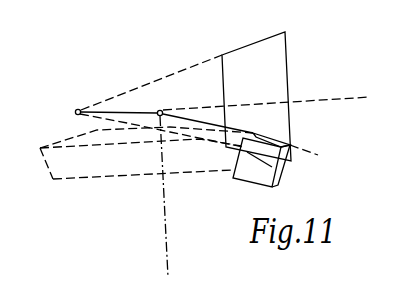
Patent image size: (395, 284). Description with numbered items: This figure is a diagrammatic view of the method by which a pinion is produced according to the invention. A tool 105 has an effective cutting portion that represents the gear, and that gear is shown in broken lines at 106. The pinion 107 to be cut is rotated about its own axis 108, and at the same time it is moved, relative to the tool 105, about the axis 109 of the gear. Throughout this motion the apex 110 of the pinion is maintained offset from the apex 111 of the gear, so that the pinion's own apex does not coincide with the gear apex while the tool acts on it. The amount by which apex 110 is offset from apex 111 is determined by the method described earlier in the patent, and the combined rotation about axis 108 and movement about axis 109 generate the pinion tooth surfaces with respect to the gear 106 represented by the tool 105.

The tool 105 is at (281, 176).
The gear 106 is at (86, 176).
The pinion 107 is at (287, 50).
The axis of the pinion 108 is at (302, 100).
The axis of the gear 109 is at (167, 205).
The apex of the pinion 110 is at (78, 109).
The apex of the gear 111 is at (161, 110).